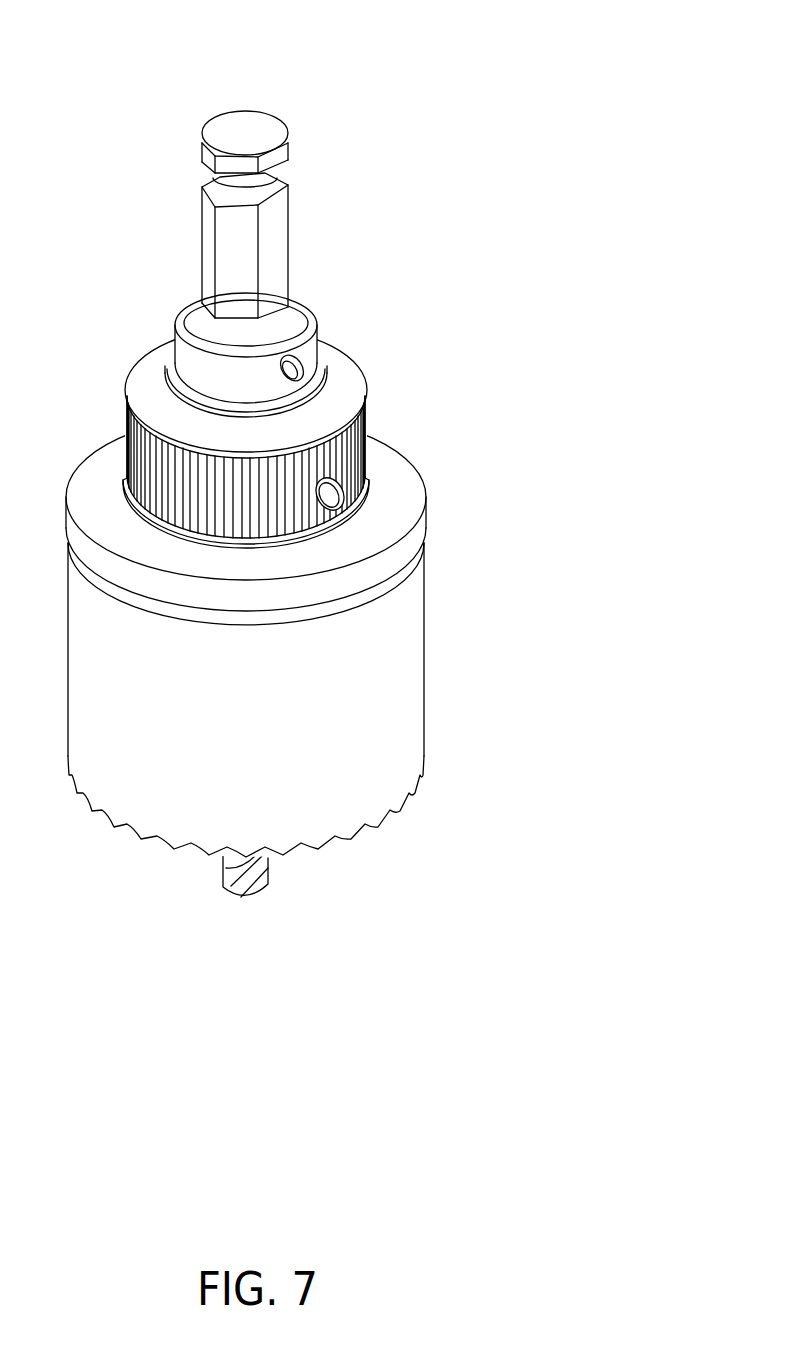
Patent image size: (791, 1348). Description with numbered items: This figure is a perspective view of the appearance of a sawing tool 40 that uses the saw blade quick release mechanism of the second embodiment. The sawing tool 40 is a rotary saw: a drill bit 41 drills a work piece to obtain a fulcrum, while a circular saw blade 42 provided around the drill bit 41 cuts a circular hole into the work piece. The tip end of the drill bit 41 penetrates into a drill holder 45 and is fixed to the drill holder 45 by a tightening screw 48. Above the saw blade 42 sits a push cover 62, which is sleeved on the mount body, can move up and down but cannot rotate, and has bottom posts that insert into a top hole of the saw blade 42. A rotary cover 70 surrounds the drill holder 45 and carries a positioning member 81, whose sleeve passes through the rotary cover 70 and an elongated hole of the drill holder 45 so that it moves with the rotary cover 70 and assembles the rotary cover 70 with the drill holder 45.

The sawing tool 40 is at (431, 89).
The drill bit 41 is at (238, 872).
The circular saw blade 42 is at (352, 715).
The drill holder 45 is at (277, 227).
The tightening screw 48 is at (294, 364).
The push cover 62 is at (318, 548).
The rotary cover 70 is at (348, 452).
The positioning member 81 is at (330, 492).